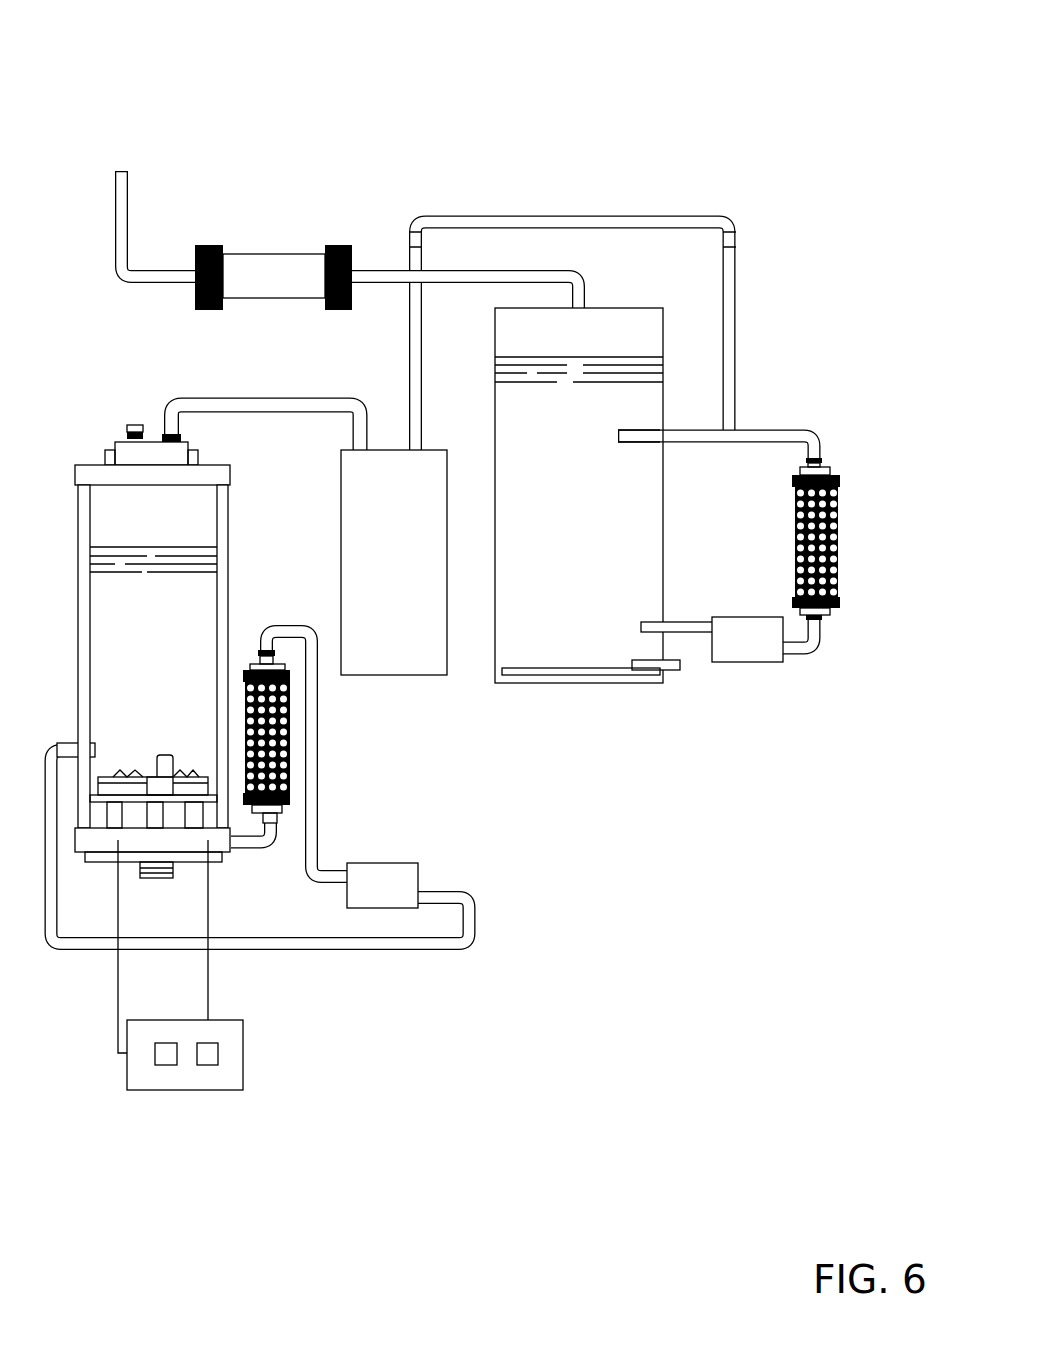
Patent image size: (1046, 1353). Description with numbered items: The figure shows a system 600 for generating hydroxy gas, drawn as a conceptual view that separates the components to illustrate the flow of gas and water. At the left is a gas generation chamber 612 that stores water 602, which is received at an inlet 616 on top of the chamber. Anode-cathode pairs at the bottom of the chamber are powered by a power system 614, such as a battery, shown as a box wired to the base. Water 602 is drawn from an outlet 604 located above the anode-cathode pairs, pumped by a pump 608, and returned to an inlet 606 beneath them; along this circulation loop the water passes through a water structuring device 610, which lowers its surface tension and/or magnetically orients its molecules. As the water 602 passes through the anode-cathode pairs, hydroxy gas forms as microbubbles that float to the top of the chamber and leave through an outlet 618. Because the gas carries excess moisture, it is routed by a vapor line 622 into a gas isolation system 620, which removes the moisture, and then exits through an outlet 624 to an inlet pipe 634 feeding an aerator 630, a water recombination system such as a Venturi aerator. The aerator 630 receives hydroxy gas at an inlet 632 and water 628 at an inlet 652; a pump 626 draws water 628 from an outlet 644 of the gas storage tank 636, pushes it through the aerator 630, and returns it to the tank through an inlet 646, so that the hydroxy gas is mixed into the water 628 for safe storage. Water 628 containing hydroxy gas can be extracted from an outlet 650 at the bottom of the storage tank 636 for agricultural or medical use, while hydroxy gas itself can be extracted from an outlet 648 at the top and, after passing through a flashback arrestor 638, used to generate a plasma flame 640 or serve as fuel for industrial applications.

The system 600 is at (160, 103).
The water 602 is at (110, 643).
The outlet 604 is at (80, 750).
The inlet 606 is at (247, 852).
The pump 608 is at (403, 863).
The water structuring device 610 is at (240, 672).
The gas generation chamber 612 is at (200, 597).
The power system 614 is at (243, 1038).
The inlet 616 is at (127, 433).
The outlet 618 is at (163, 427).
The gas isolation system 620 is at (357, 498).
The vapor line 622 is at (348, 438).
The outlet 624 is at (407, 437).
The pump 626 is at (770, 662).
The water 628 is at (636, 533).
The aerator 630 is at (840, 540).
The inlet 632 is at (835, 460).
The inlet pipe 634 is at (738, 427).
The gas storage tank 636 is at (466, 360).
The flashback arrestor 638 is at (245, 253).
The plasma flame 640 is at (115, 198).
The outlet 644 is at (648, 612).
The inlet 646 is at (653, 445).
The outlet 648 is at (587, 282).
The outlet 650 is at (677, 673).
The inlet 652 is at (835, 610).